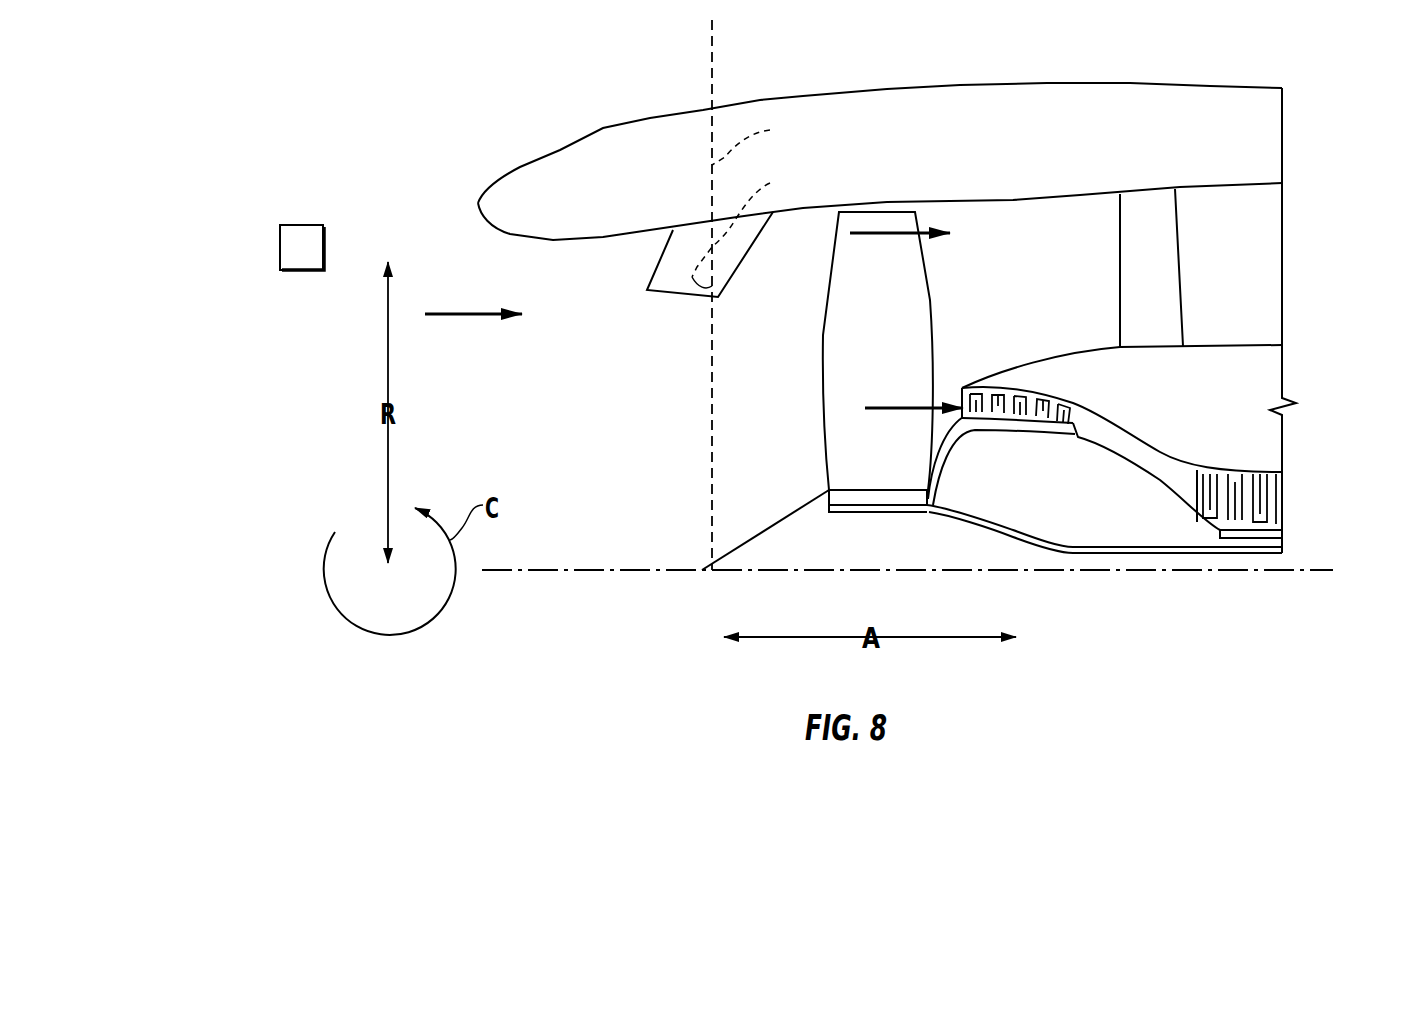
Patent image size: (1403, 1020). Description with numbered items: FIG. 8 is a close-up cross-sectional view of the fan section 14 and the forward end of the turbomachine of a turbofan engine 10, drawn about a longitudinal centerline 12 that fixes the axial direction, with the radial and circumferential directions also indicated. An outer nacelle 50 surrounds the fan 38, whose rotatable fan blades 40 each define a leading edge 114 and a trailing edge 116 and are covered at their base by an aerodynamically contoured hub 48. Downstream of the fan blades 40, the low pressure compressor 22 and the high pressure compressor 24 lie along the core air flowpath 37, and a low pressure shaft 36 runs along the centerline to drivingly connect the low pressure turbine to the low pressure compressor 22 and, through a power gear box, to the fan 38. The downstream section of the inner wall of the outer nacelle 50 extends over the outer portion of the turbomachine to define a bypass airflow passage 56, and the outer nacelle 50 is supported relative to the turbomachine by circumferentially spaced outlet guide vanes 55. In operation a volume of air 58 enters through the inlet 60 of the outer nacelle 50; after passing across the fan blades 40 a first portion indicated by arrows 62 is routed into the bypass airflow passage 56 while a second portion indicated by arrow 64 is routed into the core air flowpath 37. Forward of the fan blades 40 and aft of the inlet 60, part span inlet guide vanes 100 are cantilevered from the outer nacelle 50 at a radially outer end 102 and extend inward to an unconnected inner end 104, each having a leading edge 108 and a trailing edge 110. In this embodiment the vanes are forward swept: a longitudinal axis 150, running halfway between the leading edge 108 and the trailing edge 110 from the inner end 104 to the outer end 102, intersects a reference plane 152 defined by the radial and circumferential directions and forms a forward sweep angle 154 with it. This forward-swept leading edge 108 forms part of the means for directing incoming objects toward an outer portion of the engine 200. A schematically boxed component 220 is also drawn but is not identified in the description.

The turbofan engine 10 is at (1081, 50).
The longitudinal centerline 12 is at (565, 572).
The fan section 14 is at (887, 287).
The low pressure compressor 22 is at (1102, 391).
The high pressure compressor 24 is at (1235, 464).
The low pressure shaft 36 is at (1113, 553).
The core air flowpath 37 is at (1153, 467).
The fan 38 is at (876, 182).
The fan blades 40 is at (905, 351).
The hub 48 is at (720, 558).
The outer nacelle 50 is at (868, 76).
The outlet guide vanes 55 is at (1177, 284).
The bypass airflow passage 56 is at (1085, 322).
The volume of air 58 is at (490, 318).
The inlet 60 is at (470, 269).
The arrows indicating first portion of air 62 is at (895, 230).
The arrow indicating second portion of air 64 is at (902, 406).
The part span inlet guide vanes 100 is at (680, 267).
The outer end 102 is at (697, 218).
The inner end 104 is at (655, 290).
The leading edge 108 is at (666, 250).
The trailing edge 110 is at (750, 243).
The fan blade leading edge 114 is at (820, 342).
The fan blade trailing edge 116 is at (935, 299).
The longitudinal axis 150 is at (751, 221).
The reference plane 152 is at (761, 139).
The forward sweep angle 154 is at (709, 287).
The means for directing incoming objects towards an outer portion of the turbofan en 200 is at (626, 345).
The controller 220 is at (278, 248).